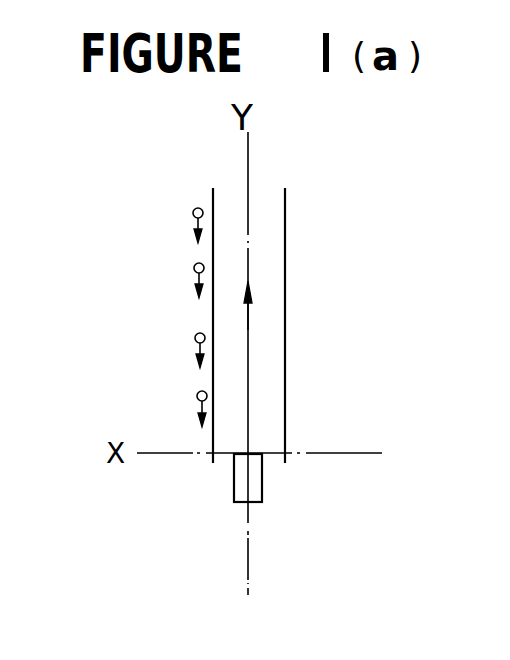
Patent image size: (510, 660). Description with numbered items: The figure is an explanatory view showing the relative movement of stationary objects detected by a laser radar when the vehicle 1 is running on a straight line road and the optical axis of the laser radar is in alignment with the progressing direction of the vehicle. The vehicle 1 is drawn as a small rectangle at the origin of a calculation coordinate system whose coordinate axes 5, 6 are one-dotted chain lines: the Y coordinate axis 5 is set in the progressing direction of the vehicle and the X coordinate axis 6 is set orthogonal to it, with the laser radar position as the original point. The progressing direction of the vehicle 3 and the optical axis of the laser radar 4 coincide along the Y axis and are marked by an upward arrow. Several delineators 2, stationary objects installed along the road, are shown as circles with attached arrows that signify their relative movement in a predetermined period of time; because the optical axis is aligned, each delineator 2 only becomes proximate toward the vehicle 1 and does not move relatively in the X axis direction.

The vehicle 1 is at (263, 488).
The delineator 2 is at (193, 211).
The progressing direction of the vehicle 3 is at (298, 315).
The optical axis of the laser radar 4 is at (248, 327).
The Y coordinate axis 5 is at (248, 165).
The X coordinate axis 6 is at (153, 454).